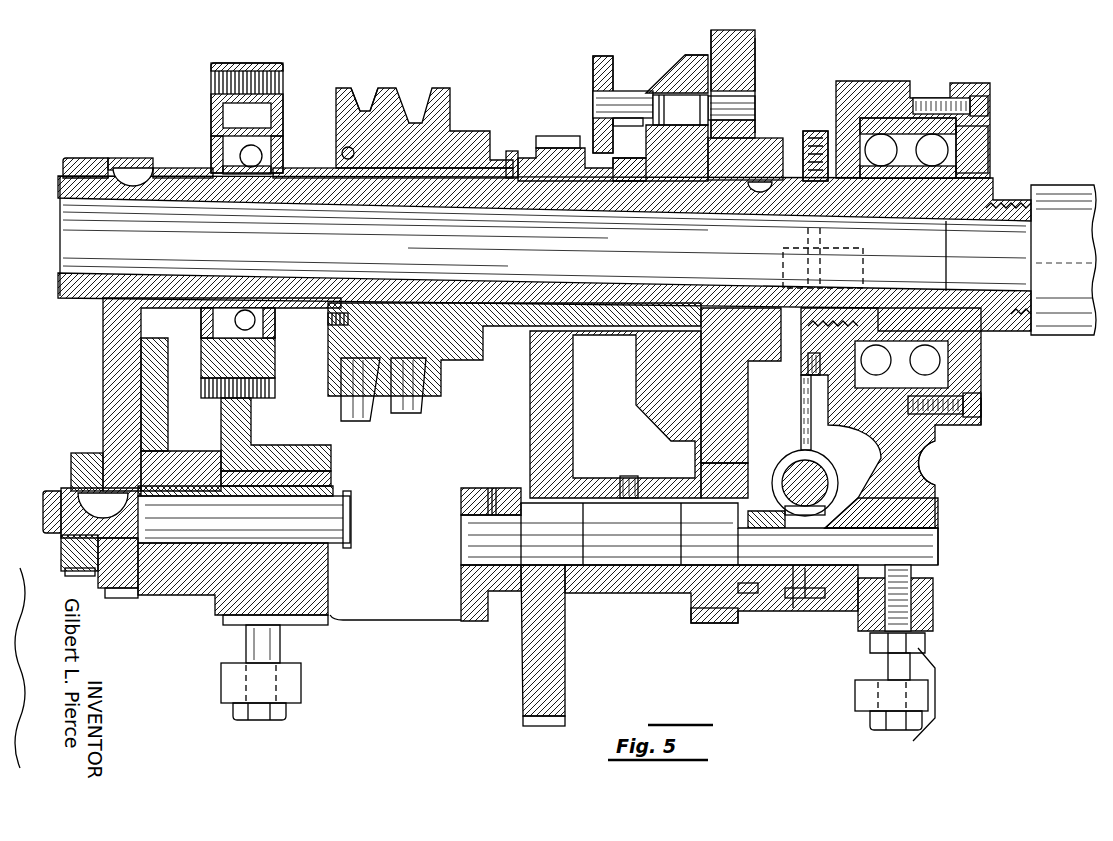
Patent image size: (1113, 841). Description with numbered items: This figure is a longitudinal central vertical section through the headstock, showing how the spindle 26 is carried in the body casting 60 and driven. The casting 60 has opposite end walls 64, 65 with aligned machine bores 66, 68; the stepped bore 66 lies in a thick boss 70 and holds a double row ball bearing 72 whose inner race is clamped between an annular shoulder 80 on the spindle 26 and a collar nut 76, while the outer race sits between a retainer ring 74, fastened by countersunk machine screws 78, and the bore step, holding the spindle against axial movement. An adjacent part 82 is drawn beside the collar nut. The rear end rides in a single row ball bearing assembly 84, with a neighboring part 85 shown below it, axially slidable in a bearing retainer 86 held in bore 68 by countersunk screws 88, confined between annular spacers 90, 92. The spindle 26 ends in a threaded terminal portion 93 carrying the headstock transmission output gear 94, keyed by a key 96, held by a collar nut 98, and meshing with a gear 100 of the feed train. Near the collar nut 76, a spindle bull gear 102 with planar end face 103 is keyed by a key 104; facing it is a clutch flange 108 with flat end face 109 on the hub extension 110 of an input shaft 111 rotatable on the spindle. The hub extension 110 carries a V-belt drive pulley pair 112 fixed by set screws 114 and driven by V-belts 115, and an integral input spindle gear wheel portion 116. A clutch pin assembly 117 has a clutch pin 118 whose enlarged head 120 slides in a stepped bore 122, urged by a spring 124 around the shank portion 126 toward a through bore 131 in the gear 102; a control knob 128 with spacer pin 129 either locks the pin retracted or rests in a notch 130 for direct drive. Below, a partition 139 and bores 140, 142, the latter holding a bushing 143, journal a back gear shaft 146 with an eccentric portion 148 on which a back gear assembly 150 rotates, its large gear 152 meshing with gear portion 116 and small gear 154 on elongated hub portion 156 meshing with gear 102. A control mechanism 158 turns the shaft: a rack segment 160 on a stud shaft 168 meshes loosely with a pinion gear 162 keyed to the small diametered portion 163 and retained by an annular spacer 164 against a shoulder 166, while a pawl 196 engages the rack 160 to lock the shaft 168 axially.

The spindle 26 is at (1013, 305).
The casting 60 is at (383, 614).
The end wall 64 is at (922, 440).
The end wall 65 is at (245, 420).
The stepped bore 66 is at (865, 380).
The bore 68 is at (226, 95).
The boss 70 is at (870, 75).
The double row ball bearing 72 is at (960, 118).
The retainer ring 74 is at (963, 425).
The collar nut 76 is at (822, 125).
The machine screws 78 is at (975, 95).
The annular shoulder 80 is at (970, 158).
The threaded collar 82 is at (795, 150).
The single row ball bearing assembly 84 is at (258, 148).
The threads 85 is at (267, 385).
The bearing retainer 86 is at (268, 108).
The countersunk screws 88 is at (205, 70).
The annular spacer 90 is at (300, 160).
The annular spacer 92 is at (172, 160).
The threaded terminal portion 93 is at (48, 283).
The headstock transmission output gear 94 is at (105, 150).
The key 96 is at (125, 165).
The collar nut 98 is at (70, 150).
The gear 100 is at (105, 385).
The spindle bull gear 102 is at (745, 40).
The planar end face 103 is at (705, 42).
The key 104 is at (755, 180).
The clutch flange 108 is at (684, 38).
The flat end face 109 is at (665, 178).
The hub extension 110 is at (503, 143).
The input shaft 111 is at (610, 337).
The V-belt drive pulley pair 112 is at (460, 120).
The set screws 114 is at (350, 140).
The V-belts 115 is at (395, 85).
The input spindle gear wheel portion 116 is at (548, 128).
The clutch pin assembly 117 is at (627, 27).
The clutch pin 118 is at (580, 53).
The enlarged head 120 is at (690, 125).
The stepped bore 122 is at (725, 130).
The spring 124 is at (660, 117).
The shank portion 126 is at (620, 112).
The control knob 128 is at (585, 80).
The spacer pin 129 is at (620, 83).
The notch 130 is at (665, 65).
The through bore 131 is at (748, 95).
The partition 139 is at (453, 570).
The bore 140 is at (453, 495).
The bore 142 is at (930, 508).
The bushing 143 is at (920, 590).
The back gear shaft 146 is at (939, 556).
The eccentric portion 148 is at (645, 555).
The back gear assembly 150 is at (591, 589).
The large gear 152 is at (556, 660).
The small gear 154 is at (735, 607).
The elongated hub portion 156 is at (617, 468).
The control mechanism 158 is at (788, 607).
The rack segment 160 is at (778, 450).
The pinion gear 162 is at (805, 590).
The small diametered portion 163 is at (797, 592).
The annular spacer 164 is at (740, 580).
The shoulder 166 is at (738, 488).
The stud shaft 168 is at (820, 470).
The pawl 196 is at (803, 436).